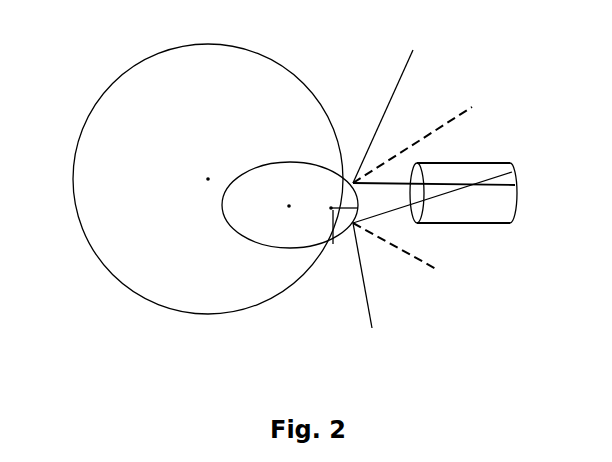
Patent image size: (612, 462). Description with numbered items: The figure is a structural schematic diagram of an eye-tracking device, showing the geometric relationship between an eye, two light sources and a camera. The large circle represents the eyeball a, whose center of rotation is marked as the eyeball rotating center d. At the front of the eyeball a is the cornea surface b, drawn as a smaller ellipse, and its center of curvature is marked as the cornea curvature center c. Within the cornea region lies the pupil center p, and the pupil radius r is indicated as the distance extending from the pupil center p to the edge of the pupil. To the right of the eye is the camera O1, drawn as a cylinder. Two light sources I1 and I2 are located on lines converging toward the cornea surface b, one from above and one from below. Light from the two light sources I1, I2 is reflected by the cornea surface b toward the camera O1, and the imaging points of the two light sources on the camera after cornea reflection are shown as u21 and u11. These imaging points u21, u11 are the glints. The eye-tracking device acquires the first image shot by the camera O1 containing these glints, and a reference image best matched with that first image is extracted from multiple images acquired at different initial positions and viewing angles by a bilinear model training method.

The eyeball a is at (74, 164).
The cornea surface b is at (247, 240).
The cornea curvature center c is at (280, 193).
The eyeball rotating center d is at (207, 165).
The pupil center p is at (323, 210).
The pupil radius r is at (344, 193).
The light source I1 is at (397, 111).
The light source I2 is at (375, 284).
The imaging point u11 is at (458, 193).
The imaging point u21 is at (454, 188).
The camera O1 is at (465, 223).